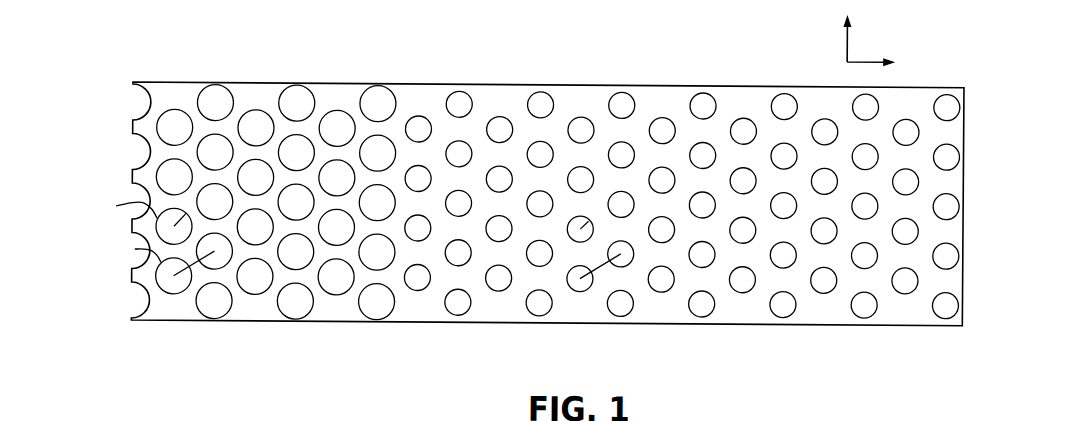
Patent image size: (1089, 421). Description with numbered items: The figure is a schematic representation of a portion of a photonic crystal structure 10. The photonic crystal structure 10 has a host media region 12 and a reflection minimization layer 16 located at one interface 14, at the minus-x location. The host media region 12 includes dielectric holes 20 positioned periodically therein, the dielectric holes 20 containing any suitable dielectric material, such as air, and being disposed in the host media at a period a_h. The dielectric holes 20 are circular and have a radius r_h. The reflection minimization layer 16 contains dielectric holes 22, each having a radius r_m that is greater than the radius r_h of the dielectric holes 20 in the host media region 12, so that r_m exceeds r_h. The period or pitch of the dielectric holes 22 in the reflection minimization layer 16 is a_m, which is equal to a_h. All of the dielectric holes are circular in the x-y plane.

The photonic crystal structure 10 is at (507, 63).
The host media region 12 is at (964, 330).
The interface 14 is at (400, 308).
The reflection minimization layer 16 is at (396, 329).
The dielectric holes 20 is at (743, 123).
The dielectric holes 22 is at (335, 117).